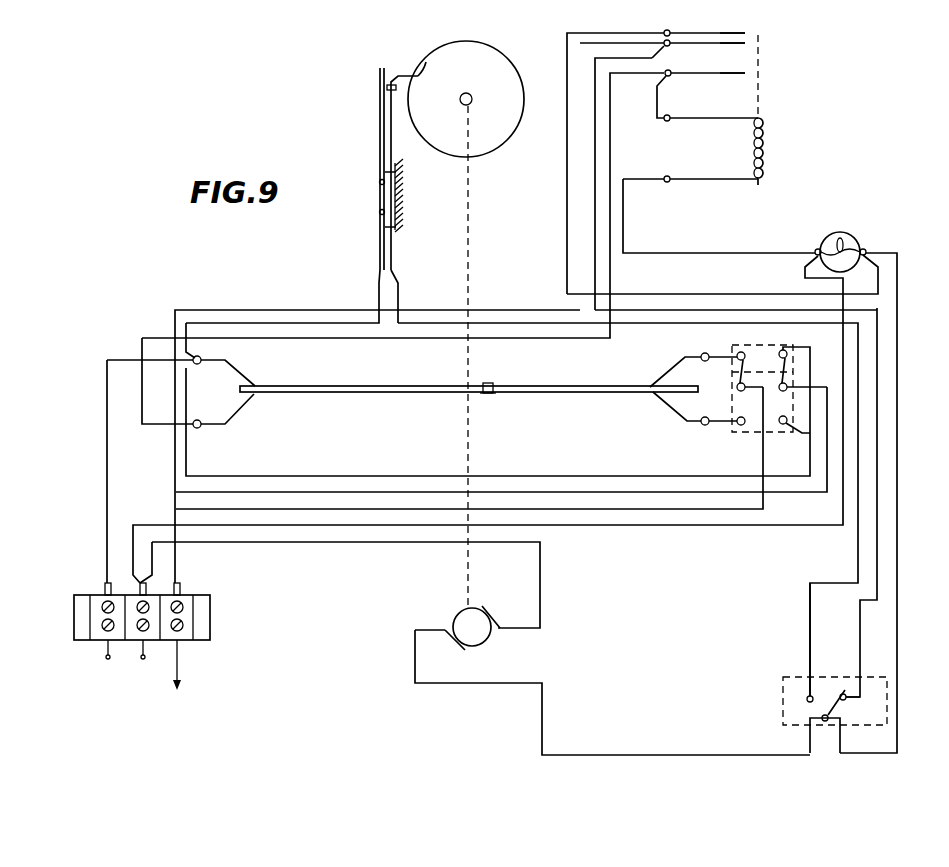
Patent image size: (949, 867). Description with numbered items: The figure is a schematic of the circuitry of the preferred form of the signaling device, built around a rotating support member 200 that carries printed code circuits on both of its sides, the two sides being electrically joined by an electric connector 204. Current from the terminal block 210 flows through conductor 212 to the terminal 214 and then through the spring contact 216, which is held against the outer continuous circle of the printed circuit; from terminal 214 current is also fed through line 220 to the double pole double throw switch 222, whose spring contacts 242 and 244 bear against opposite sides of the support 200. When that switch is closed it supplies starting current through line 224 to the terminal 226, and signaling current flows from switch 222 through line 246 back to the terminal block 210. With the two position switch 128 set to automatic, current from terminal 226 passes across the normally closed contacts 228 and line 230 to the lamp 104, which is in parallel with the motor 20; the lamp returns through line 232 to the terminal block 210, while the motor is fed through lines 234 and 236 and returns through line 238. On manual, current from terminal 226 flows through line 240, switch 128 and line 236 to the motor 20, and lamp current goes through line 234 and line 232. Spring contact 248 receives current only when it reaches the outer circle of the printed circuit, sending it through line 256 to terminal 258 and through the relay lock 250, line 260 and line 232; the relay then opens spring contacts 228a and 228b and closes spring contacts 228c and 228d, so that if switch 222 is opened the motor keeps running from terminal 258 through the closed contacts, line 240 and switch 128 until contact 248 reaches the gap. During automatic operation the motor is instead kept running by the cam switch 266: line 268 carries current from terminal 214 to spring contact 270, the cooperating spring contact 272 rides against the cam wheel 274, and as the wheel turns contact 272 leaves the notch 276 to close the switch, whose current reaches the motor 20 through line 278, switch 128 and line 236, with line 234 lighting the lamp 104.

The motor 20 is at (486, 644).
The lamp 104 is at (846, 233).
The two position switch 128 is at (784, 680).
The rotating support member 200 is at (428, 385).
The electric connector 204 is at (494, 384).
The terminal block 210 is at (210, 607).
The conductor 212 is at (107, 492).
The terminal 214 is at (202, 360).
The spring contact 216 is at (240, 372).
The line 220 is at (433, 476).
The double pole double throw switch 222 is at (788, 347).
The line 224 is at (333, 298).
The terminal 226 is at (663, 38).
The normally closed contacts 228 is at (736, 32).
The spring contact 228a is at (748, 34).
The spring contact 228b is at (748, 43).
The spring contact 228c is at (704, 58).
The spring contact 228d is at (752, 73).
The line 230 is at (567, 34).
The line 232 is at (805, 272).
The line 234 is at (898, 423).
The line 236 is at (672, 753).
The line 238 is at (385, 542).
The line 240 is at (596, 148).
The spring contact 242 is at (676, 366).
The spring contact 244 is at (674, 412).
The line 246 is at (176, 509).
The spring contact 248 is at (236, 412).
The relay lock 250 is at (764, 158).
The line 256 is at (568, 272).
The terminal 258 is at (707, 83).
The line 260 is at (722, 253).
The cam switch 266 is at (376, 75).
The line 268 is at (252, 322).
The spring contact 270 is at (379, 120).
The spring contact 272 is at (393, 80).
The cam wheel 274 is at (490, 88).
The notch 276 is at (424, 68).
The line 278 is at (400, 296).